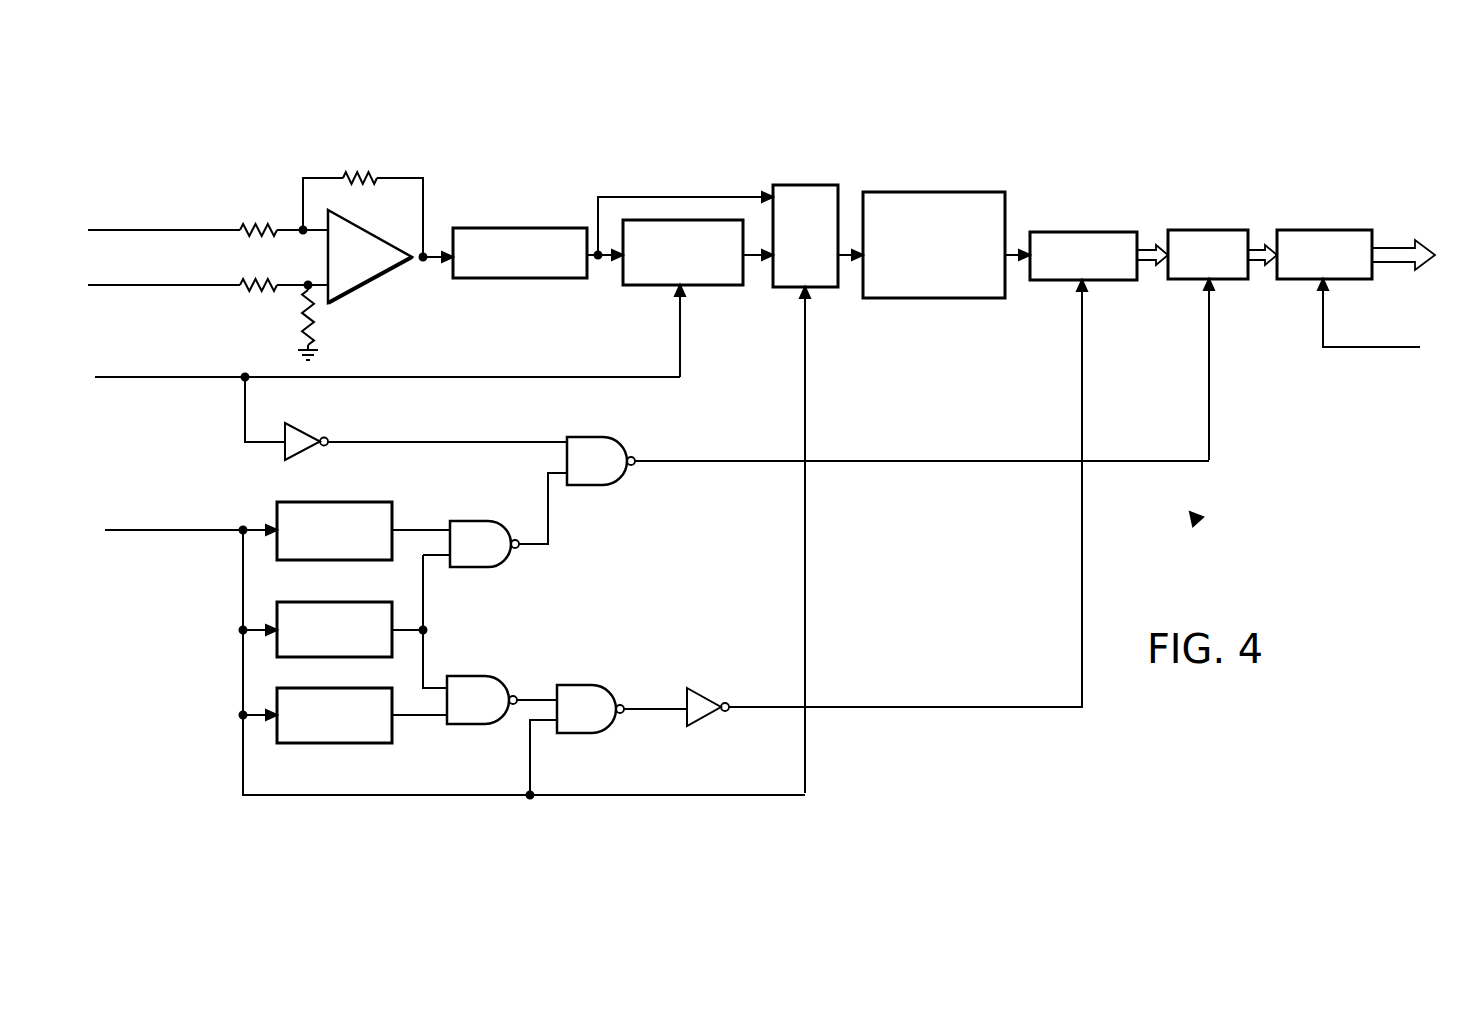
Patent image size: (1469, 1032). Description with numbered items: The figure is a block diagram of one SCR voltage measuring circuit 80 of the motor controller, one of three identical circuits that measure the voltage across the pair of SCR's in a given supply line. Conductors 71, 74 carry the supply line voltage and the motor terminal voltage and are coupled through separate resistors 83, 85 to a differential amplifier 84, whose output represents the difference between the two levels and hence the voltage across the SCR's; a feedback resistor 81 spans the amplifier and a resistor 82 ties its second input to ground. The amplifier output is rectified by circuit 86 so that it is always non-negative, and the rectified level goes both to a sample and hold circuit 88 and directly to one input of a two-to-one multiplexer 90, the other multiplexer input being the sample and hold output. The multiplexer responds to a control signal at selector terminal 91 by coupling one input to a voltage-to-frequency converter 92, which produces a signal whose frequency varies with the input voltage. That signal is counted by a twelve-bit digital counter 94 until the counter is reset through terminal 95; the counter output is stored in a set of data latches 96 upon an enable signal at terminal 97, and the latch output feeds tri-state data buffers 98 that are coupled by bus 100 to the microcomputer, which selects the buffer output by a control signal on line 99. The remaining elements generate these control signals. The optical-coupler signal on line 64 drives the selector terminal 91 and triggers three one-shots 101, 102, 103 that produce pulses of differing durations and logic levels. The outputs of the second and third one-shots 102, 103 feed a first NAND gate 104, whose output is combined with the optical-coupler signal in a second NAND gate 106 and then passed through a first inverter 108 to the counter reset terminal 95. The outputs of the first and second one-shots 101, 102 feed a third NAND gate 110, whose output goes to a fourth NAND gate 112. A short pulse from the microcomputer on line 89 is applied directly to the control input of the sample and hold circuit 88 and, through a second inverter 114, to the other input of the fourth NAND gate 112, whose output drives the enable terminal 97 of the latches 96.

The conductor 74 is at (108, 230).
The conductor 71 is at (118, 288).
The resistor 83 is at (262, 222).
The resistor 85 is at (262, 297).
The feedback resistor 81 is at (363, 180).
The differential amplifier 84 is at (376, 270).
The resistor to ground 82 is at (314, 322).
The rectifier circuit 86 is at (476, 228).
The sample and hold circuit 88 is at (650, 290).
The two-to-one multiplexer 90 is at (790, 290).
The selector terminal 91 is at (811, 300).
The voltage-to-frequency converter 92 is at (968, 300).
The twelve-bit digital counter 94 is at (1058, 282).
The reset terminal 95 is at (1090, 289).
The set of data latches 96 is at (1190, 282).
The enable input terminal 97 is at (1216, 288).
The tri-state data buffers 98 is at (1308, 282).
The control line 99 is at (1380, 350).
The bus 100 is at (1398, 268).
The line 89 is at (165, 380).
The second inverter 114 is at (283, 447).
The control line 64 is at (192, 532).
The first one-shot 101 is at (277, 515).
The second one-shot 102 is at (315, 602).
The third one-shot 103 is at (305, 688).
The third NAND gate 110 is at (480, 520).
The fourth NAND gate 112 is at (590, 437).
The first NAND gate 104 is at (465, 724).
The second NAND gate 106 is at (588, 733).
The first inverter 108 is at (700, 724).
The SCR voltage measuring circuit 80 is at (1200, 521).